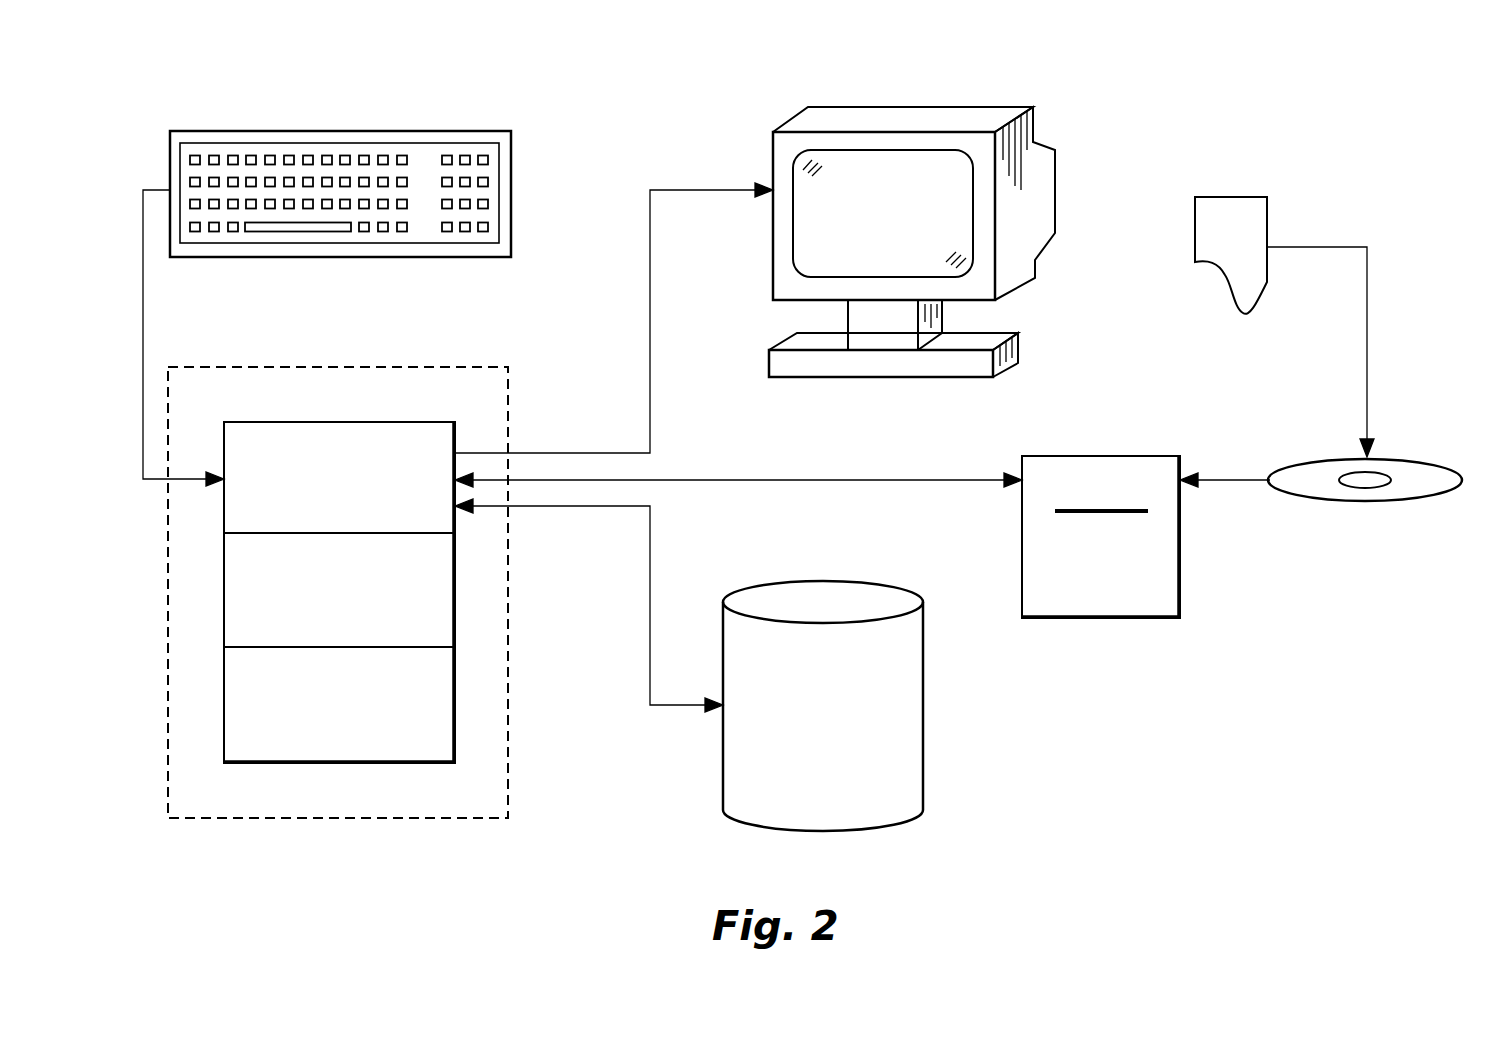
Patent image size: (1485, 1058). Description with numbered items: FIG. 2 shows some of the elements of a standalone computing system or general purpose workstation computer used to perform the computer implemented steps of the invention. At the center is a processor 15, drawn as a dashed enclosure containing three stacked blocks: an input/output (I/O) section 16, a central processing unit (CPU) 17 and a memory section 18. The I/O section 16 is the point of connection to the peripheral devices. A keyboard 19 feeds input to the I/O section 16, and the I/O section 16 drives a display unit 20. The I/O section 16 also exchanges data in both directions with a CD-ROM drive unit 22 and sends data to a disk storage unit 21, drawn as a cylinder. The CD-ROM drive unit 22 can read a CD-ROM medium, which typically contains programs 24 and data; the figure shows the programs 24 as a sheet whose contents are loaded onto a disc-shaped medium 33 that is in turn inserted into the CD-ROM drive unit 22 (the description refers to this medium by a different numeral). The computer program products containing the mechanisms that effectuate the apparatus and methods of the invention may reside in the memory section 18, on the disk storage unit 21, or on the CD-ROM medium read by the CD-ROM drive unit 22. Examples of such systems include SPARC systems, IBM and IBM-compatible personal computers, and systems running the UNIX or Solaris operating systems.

The processor 15 is at (394, 557).
The input/output (I/O) section 16 is at (317, 428).
The central processing unit (CPU) 17 is at (455, 608).
The memory section 18 is at (455, 748).
The keyboard 19 is at (488, 133).
The display unit 20 is at (980, 118).
The disk storage unit 21 is at (920, 678).
The CD-ROM drive unit 22 is at (1052, 456).
The programs 24 is at (1210, 205).
The disk 33 is at (1338, 462).